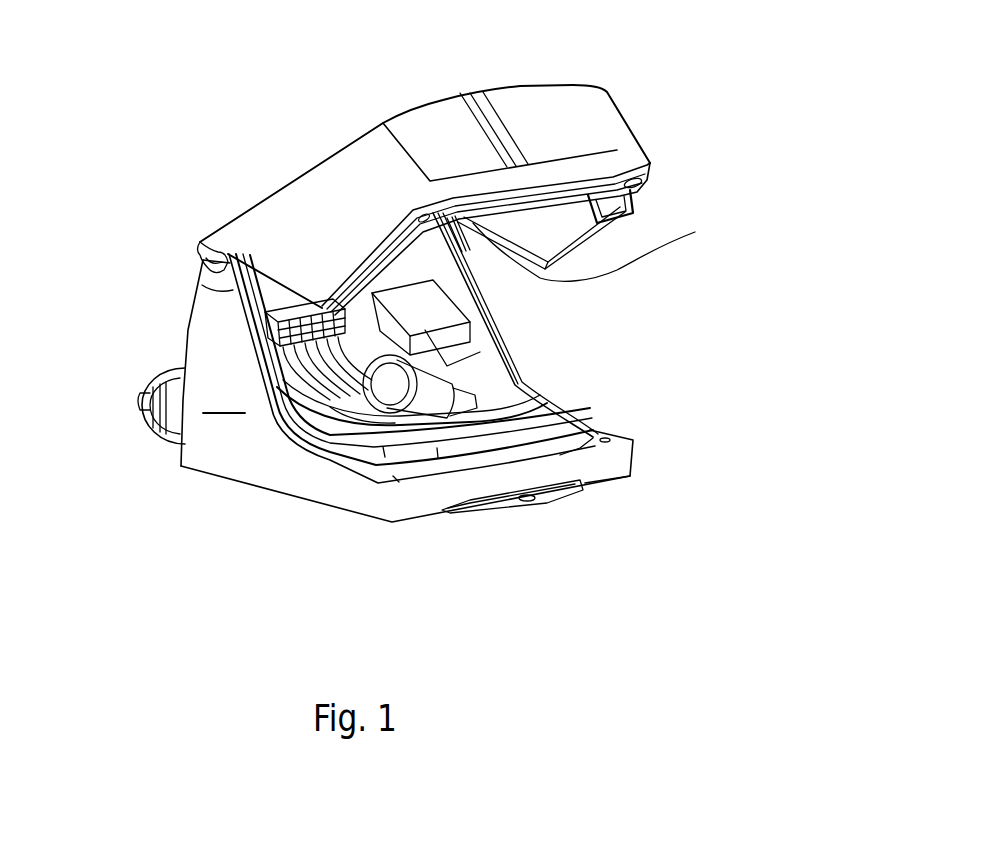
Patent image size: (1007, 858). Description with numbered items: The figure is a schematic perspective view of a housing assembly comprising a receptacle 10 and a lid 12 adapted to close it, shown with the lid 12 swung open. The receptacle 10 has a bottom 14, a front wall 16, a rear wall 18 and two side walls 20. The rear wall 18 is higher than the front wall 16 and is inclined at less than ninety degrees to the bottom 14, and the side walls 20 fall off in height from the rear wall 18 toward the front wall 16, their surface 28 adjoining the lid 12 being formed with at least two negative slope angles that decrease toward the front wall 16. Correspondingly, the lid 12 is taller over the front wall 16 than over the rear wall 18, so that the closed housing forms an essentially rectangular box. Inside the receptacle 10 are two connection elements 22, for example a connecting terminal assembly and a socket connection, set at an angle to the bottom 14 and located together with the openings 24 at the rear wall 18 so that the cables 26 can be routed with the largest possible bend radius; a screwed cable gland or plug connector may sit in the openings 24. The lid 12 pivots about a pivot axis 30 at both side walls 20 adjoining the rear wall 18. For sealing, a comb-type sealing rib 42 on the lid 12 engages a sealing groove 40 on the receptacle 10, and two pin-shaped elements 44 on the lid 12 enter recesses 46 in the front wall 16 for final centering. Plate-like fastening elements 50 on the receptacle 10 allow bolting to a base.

The receptacle 10 is at (402, 421).
The lid 12 is at (410, 167).
The bottom 14 is at (337, 498).
The front wall 16 is at (620, 463).
The rear wall 18 is at (118, 406).
The side walls 20 is at (213, 363).
The connection elements 22 is at (263, 332).
The openings 24 is at (175, 428).
The cables 26 is at (345, 430).
The surface 28 is at (305, 433).
The pivot axis 30 is at (603, 123).
The sealing groove 40 is at (578, 458).
The sealing rib 42 is at (622, 216).
The pin-shaped elements 44 is at (606, 225).
The recesses 46 is at (397, 480).
The fastening elements 50 is at (500, 503).